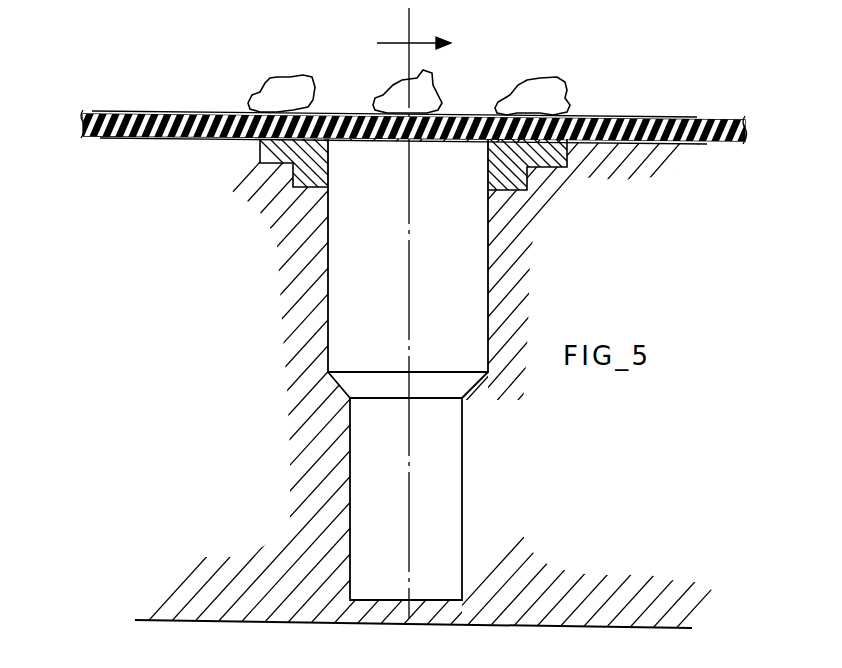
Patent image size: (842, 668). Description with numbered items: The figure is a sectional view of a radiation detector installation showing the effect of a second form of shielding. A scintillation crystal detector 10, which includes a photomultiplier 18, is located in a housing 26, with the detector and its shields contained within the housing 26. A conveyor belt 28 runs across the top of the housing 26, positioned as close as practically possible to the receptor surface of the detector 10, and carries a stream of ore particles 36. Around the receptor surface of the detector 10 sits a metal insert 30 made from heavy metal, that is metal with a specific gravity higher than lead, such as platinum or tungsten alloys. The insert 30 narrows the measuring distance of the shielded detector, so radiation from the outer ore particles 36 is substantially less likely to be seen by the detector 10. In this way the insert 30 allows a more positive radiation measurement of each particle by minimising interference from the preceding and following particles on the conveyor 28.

The scintillation crystal detector 10 is at (433, 254).
The photomultiplier 18 is at (447, 512).
The housing 26 is at (249, 339).
The conveyor belt 28 is at (642, 124).
The metal insert 30 is at (552, 162).
The ore particles 36 is at (296, 86).